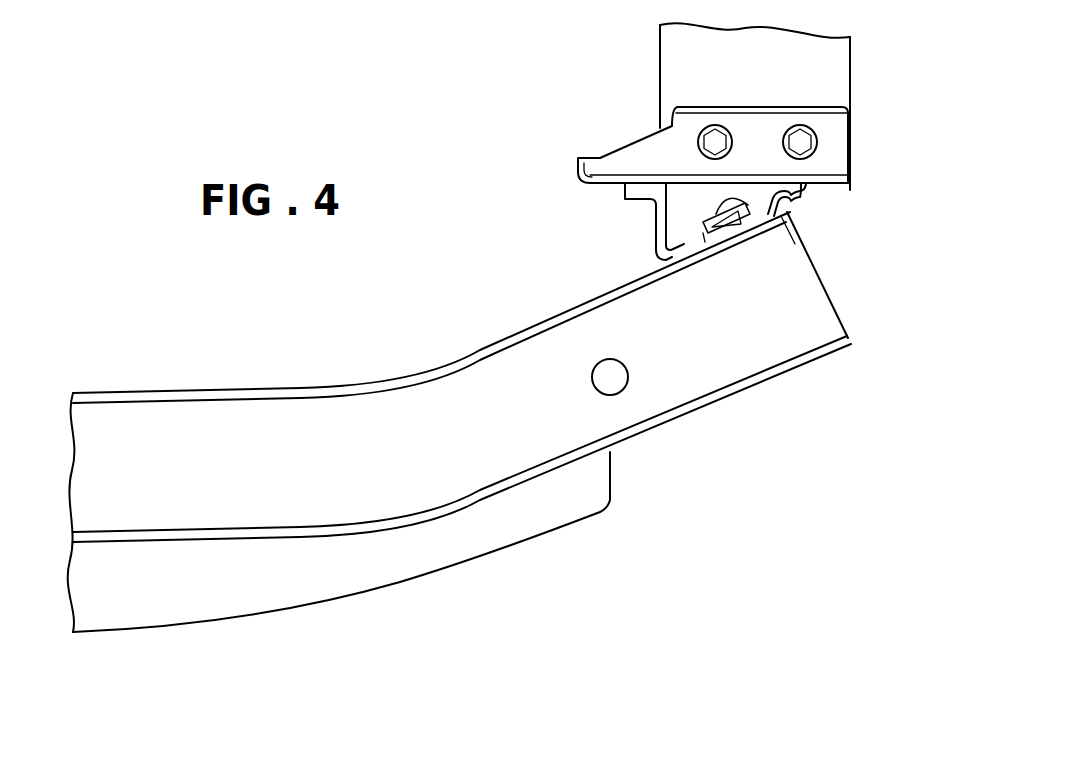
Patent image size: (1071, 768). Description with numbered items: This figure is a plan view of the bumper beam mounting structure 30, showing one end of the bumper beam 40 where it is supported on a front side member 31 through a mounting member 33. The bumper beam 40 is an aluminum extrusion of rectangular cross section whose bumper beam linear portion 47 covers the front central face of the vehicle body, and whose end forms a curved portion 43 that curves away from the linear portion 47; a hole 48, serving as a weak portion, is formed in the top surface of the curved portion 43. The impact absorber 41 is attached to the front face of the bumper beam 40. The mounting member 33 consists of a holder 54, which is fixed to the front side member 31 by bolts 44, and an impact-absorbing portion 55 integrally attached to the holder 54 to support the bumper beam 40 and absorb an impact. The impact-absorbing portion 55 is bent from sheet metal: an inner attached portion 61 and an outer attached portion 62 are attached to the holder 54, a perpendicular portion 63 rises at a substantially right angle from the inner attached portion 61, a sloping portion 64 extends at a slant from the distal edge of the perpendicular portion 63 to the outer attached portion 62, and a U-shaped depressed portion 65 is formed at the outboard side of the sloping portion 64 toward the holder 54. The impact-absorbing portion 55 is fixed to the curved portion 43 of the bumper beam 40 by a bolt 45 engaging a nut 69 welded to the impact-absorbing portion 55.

The bumper beam mounting structure 30 is at (672, 174).
The front side member 31 is at (658, 97).
The mounting member 33 is at (635, 178).
The bumper beam 40 is at (459, 448).
The impact absorber 41 is at (323, 600).
The curved portion 43 is at (558, 437).
The bolt 44 is at (715, 142).
The bolt 45 is at (747, 207).
The bumper beam linear portion 47 is at (203, 513).
The hole 48 is at (628, 385).
The holder 54 is at (622, 147).
The impact-absorbing portion 55 is at (582, 217).
The inner attached portion 61 is at (640, 200).
The outer attached portion 62 is at (840, 192).
The perpendicular portion 63 is at (655, 235).
The sloping portion 64 is at (707, 222).
The depressed portion 65 is at (790, 205).
The nut 69 is at (705, 243).